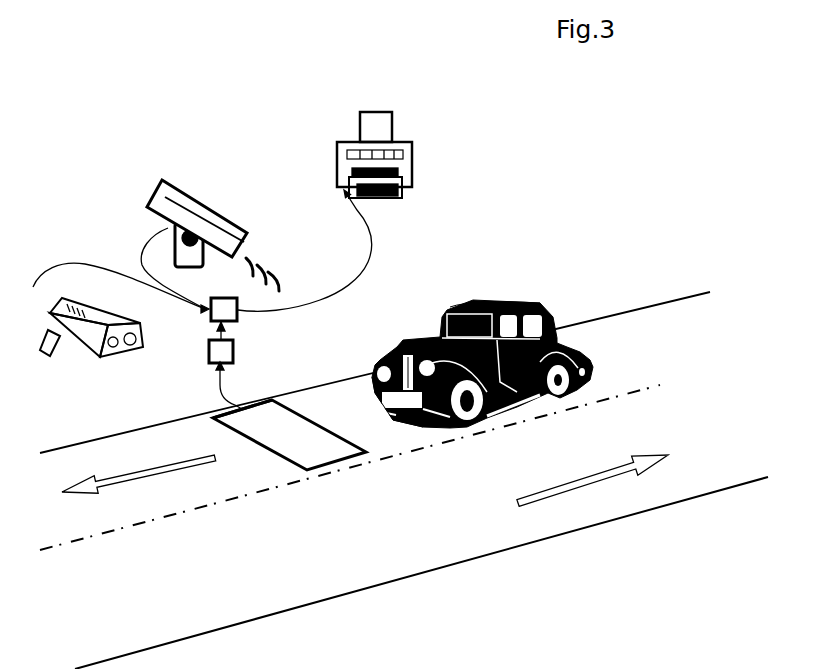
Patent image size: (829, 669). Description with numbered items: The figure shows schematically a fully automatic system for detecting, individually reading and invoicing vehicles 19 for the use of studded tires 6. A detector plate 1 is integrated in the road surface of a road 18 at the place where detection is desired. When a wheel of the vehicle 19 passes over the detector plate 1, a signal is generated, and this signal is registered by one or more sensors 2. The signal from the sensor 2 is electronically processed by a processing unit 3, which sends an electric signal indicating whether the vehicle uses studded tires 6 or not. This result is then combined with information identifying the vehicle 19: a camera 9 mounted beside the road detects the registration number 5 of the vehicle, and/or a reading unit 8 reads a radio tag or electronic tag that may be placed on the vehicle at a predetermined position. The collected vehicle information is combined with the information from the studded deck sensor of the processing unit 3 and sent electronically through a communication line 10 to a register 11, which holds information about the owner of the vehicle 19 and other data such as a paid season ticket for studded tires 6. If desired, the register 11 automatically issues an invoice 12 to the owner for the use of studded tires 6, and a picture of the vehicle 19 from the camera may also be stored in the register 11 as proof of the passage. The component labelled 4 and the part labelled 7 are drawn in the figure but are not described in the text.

The detector plate 1 is at (283, 400).
The sensor 2 is at (257, 402).
The processing unit 3 is at (207, 366).
The data interface unit 4 is at (235, 321).
The registration number 5 is at (395, 430).
The studded tires 6 is at (462, 430).
The vehicle 7 is at (463, 300).
The reading unit 8 is at (217, 210).
The camera 9 is at (93, 300).
The communication line 10 is at (354, 277).
The register 11 is at (422, 158).
The invoice 12 is at (402, 200).
The road 18 is at (664, 342).
The vehicle 19 is at (517, 297).